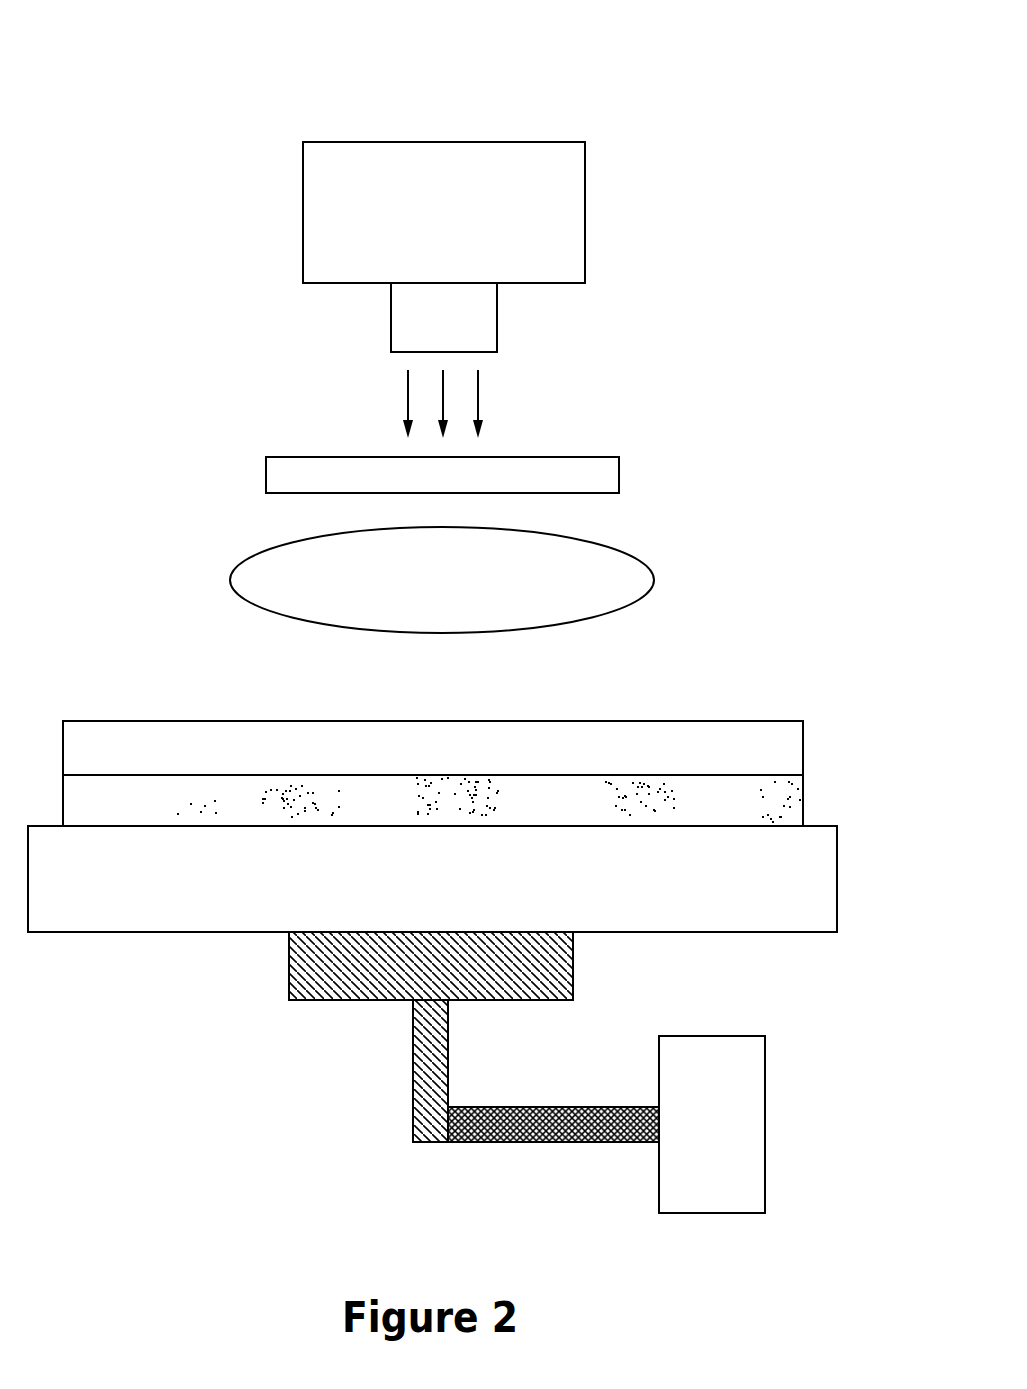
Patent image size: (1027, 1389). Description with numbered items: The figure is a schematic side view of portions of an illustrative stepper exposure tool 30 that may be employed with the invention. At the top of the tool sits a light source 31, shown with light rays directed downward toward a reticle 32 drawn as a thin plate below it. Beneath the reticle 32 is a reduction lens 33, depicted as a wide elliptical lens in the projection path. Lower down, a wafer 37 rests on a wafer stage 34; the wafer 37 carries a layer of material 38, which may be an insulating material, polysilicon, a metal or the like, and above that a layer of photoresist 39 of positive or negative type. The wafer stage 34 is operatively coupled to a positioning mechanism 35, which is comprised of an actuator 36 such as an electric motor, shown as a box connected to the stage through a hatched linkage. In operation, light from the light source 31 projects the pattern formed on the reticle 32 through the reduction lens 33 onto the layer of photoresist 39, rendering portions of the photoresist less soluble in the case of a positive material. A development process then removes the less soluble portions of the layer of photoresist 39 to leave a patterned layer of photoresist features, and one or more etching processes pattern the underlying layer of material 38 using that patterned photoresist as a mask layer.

The stepper exposure tool 30 is at (267, 107).
The light source 31 is at (558, 217).
The reticle 32 is at (602, 475).
The reduction lens 33 is at (618, 581).
The wafer stage 34 is at (343, 982).
The positioning mechanism 35 is at (517, 1168).
The actuator 36 is at (728, 1159).
The wafer 37 is at (773, 897).
The layer of material 38 is at (748, 808).
The layer of photoresist 39 is at (714, 740).